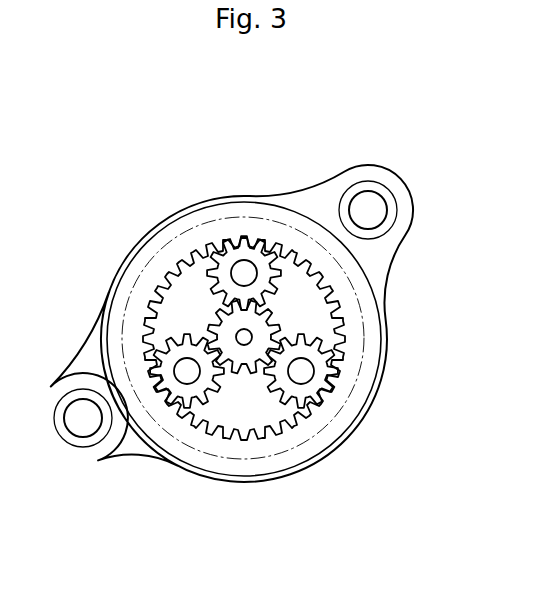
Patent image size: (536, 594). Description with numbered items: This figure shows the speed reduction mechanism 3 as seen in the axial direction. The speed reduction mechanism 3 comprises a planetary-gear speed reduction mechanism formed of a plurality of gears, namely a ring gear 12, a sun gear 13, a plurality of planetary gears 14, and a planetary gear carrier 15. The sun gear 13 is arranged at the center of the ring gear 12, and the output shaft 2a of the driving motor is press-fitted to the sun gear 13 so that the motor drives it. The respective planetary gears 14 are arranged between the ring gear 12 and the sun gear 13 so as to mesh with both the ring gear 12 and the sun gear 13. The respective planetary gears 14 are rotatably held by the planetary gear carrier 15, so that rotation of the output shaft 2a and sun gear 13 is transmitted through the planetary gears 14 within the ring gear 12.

The speed reduction mechanism 3 is at (186, 189).
The ring gear 12 is at (123, 290).
The sun gear 13 is at (243, 368).
The planetary gears 14 is at (243, 247).
The planetary gear carrier 15 is at (277, 213).
The output shaft 2a is at (256, 333).